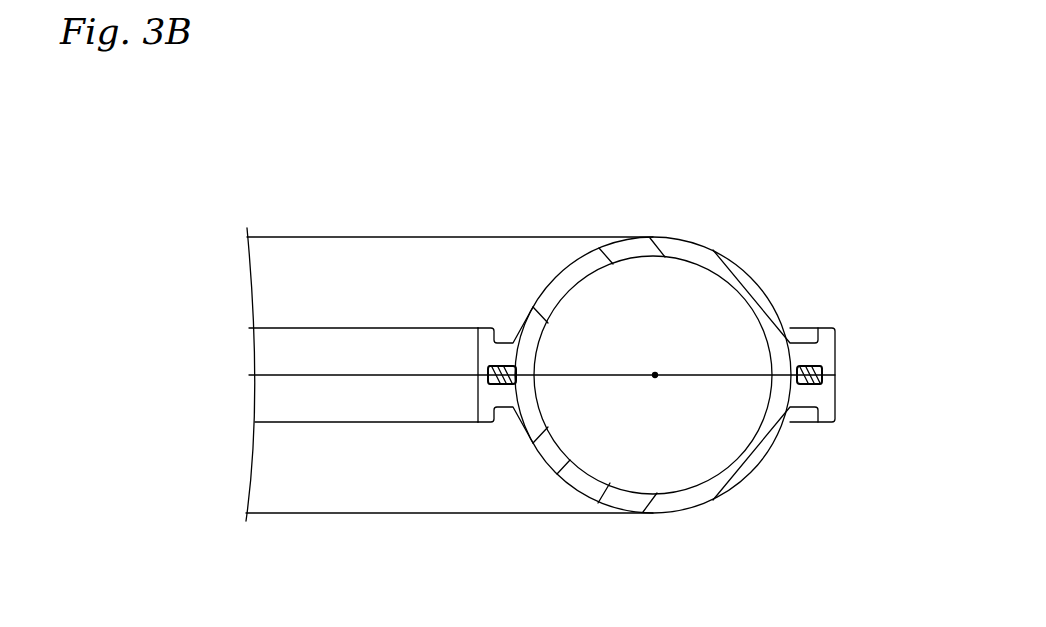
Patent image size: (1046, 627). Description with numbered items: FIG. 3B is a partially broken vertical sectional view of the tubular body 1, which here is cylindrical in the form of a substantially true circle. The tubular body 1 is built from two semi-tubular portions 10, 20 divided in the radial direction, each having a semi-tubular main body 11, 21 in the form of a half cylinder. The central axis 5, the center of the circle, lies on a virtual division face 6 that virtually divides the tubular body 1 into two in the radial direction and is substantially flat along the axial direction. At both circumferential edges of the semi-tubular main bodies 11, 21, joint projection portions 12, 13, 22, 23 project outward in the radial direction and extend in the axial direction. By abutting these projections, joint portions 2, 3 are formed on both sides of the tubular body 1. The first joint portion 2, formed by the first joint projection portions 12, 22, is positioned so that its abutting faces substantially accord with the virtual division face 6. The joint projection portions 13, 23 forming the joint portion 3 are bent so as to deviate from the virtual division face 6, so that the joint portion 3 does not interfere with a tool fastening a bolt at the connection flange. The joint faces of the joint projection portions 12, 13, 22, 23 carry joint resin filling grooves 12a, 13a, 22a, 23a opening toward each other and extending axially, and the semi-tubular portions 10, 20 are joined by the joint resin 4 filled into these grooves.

The tubular body 1 is at (268, 151).
The first joint portion 2 is at (469, 188).
The joint portion 3 is at (910, 271).
The joint resin 4 is at (491, 386).
The central axis 5 is at (656, 379).
The virtual division face 6 is at (690, 374).
The semi-tubular portion 10 is at (640, 527).
The semi-tubular main body 11 is at (369, 487).
The first joint projection portion 12 is at (480, 405).
The joint resin filling groove 12a is at (515, 381).
The joint projection portion 13 is at (827, 402).
The joint resin filling groove 13a is at (797, 379).
The semi-tubular portion 20 is at (634, 231).
The semi-tubular main body 21 is at (313, 262).
The first joint projection portion 22 is at (480, 340).
The joint resin filling groove 22a is at (515, 369).
The joint projection portion 23 is at (827, 357).
The joint resin filling groove 23a is at (797, 371).